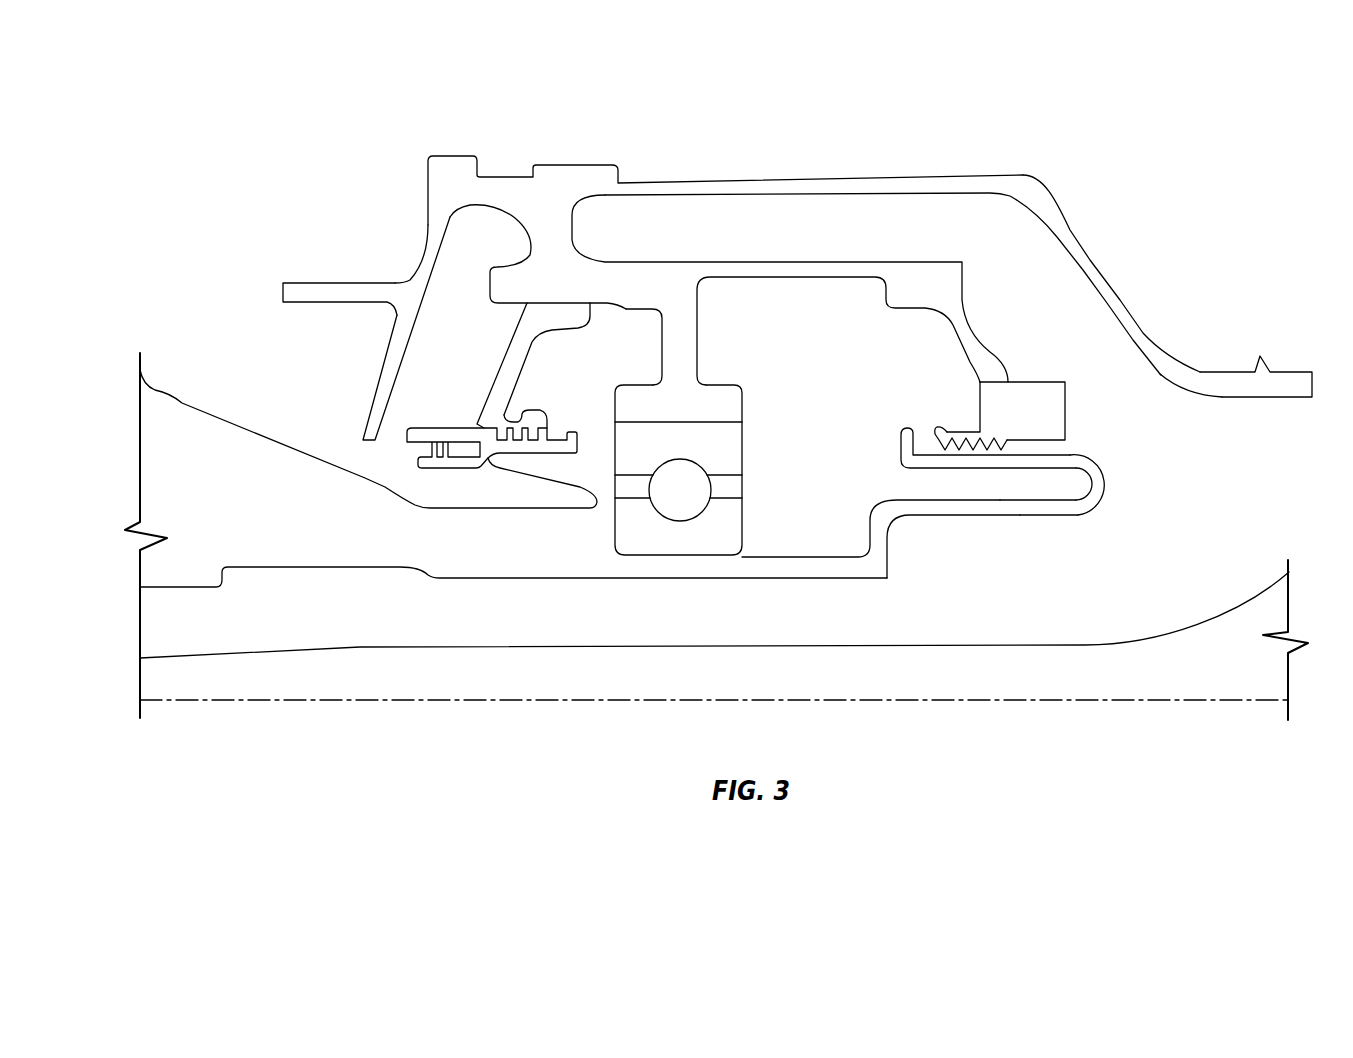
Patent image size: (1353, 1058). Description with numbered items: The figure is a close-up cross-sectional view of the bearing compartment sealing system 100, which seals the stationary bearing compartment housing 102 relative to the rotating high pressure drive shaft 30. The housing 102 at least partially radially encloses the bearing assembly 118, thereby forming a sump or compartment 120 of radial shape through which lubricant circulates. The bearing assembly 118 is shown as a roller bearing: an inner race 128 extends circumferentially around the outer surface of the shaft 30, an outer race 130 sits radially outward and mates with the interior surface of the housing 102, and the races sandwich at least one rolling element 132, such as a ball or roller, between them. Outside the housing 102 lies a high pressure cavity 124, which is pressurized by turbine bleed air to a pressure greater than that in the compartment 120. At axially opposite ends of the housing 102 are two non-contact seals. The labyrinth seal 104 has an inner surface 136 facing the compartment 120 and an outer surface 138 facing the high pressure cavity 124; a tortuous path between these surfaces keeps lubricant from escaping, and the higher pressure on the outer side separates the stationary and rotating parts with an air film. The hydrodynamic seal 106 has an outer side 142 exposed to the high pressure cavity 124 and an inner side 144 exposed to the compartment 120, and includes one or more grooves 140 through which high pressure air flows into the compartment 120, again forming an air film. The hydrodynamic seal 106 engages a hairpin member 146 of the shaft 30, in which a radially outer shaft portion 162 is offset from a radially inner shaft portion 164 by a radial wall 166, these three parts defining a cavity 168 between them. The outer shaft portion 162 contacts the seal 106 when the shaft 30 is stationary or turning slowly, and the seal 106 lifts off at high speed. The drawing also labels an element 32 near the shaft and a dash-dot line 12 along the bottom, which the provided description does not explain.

The bearing compartment sealing system 100 is at (390, 146).
The bearing compartment housing 102 is at (613, 283).
The labyrinth seal 104 is at (483, 420).
The hydrodynamic seal 106 is at (1042, 415).
The bearing assembly 118 is at (756, 391).
The compartment 120 is at (757, 290).
The high pressure cavity 124 is at (457, 315).
The inner race 128 is at (722, 525).
The outer race 130 is at (725, 440).
The rolling element 132 is at (683, 488).
The inner surface of labyrinth seal 136 is at (520, 417).
The outer surface of labyrinth seal 138 is at (437, 432).
The groove 140 is at (981, 450).
The outer side of hydrodynamic seal 142 is at (1007, 381).
The inner side of hydrodynamic seal 144 is at (980, 410).
The hairpin member 146 is at (1127, 492).
The radially outer shaft portion 162 is at (1042, 456).
The radially inner shaft portion 164 is at (1053, 517).
The radial wall 166 is at (1112, 497).
The cavity 168 is at (1052, 488).
The high pressure drive shaft 30 is at (870, 572).
The hub surface 32 is at (1033, 662).
The engine centerline 12 is at (810, 702).